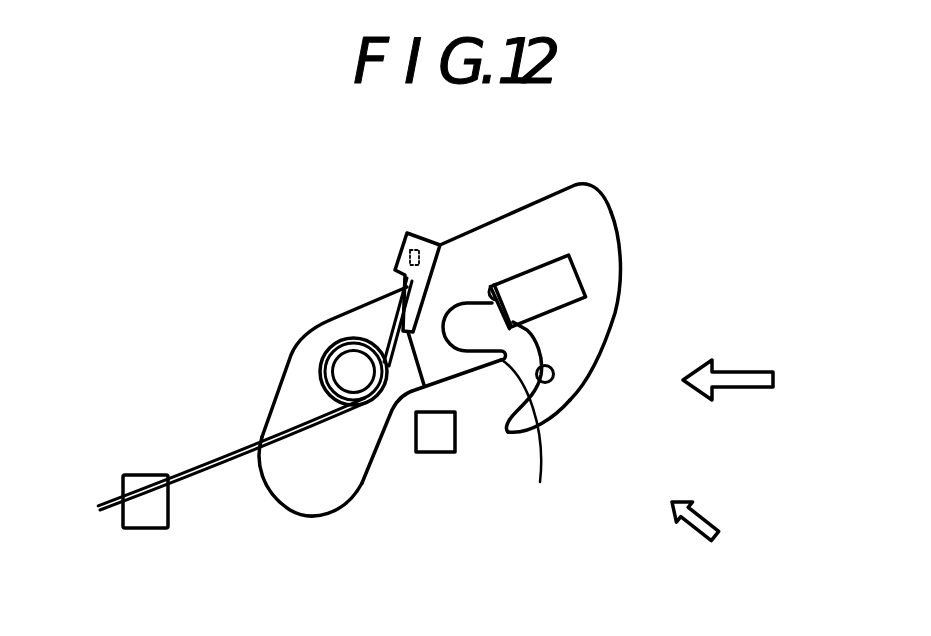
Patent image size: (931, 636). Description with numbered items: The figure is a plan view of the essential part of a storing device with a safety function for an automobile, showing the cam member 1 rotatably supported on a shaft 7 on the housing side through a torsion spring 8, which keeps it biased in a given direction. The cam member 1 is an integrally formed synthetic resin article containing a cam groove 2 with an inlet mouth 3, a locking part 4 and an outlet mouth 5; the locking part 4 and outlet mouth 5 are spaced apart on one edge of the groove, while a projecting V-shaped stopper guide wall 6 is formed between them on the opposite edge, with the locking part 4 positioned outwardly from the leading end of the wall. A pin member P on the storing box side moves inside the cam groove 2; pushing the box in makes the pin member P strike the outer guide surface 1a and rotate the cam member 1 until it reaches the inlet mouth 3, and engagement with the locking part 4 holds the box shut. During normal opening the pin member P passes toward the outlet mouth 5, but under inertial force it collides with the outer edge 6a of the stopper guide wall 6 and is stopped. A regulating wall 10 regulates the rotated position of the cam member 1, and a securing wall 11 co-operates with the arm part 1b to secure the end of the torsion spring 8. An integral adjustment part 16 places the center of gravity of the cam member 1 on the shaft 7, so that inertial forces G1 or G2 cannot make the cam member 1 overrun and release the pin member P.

The cam member 1 is at (573, 203).
The outer guide surface 1a is at (612, 335).
The arm part 1b is at (405, 237).
The cam groove 2 is at (475, 322).
The inlet mouth 3 is at (510, 377).
The locking part 4 is at (553, 371).
The outlet mouth 5 is at (493, 285).
The stopper guide wall 6 is at (468, 349).
The outer edge 6a is at (534, 437).
The shaft 7 is at (350, 368).
The torsion spring 8 is at (213, 474).
The regulating wall 10 is at (432, 435).
The securing wall 11 is at (143, 517).
The adjustment part 16 is at (313, 497).
The pin member P is at (553, 379).
The inertial force G1 is at (750, 380).
The inertial force G2 is at (720, 528).